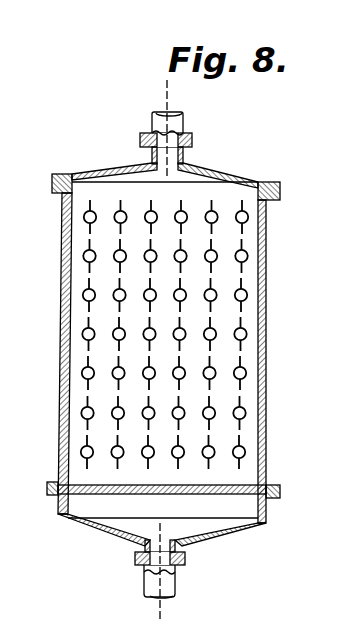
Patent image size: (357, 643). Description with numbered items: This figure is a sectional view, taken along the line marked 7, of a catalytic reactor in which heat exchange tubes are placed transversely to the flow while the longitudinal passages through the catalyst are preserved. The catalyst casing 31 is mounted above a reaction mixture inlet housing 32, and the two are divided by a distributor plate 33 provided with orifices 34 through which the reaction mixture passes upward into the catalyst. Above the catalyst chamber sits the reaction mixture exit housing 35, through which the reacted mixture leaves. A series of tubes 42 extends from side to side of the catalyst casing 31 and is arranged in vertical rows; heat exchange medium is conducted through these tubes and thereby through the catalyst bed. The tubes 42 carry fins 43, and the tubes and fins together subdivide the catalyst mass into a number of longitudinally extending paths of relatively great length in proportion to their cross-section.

The section line 7- 7 is at (142, 88).
The catalyst casing 31 is at (278, 278).
The reaction mixture inlet housing 32 is at (118, 537).
The distributor plate 33 is at (47, 488).
The orifices 34 is at (130, 488).
The reaction mixture exit housing 35 is at (230, 172).
The tubes 42 is at (86, 303).
The fins 43 is at (90, 242).